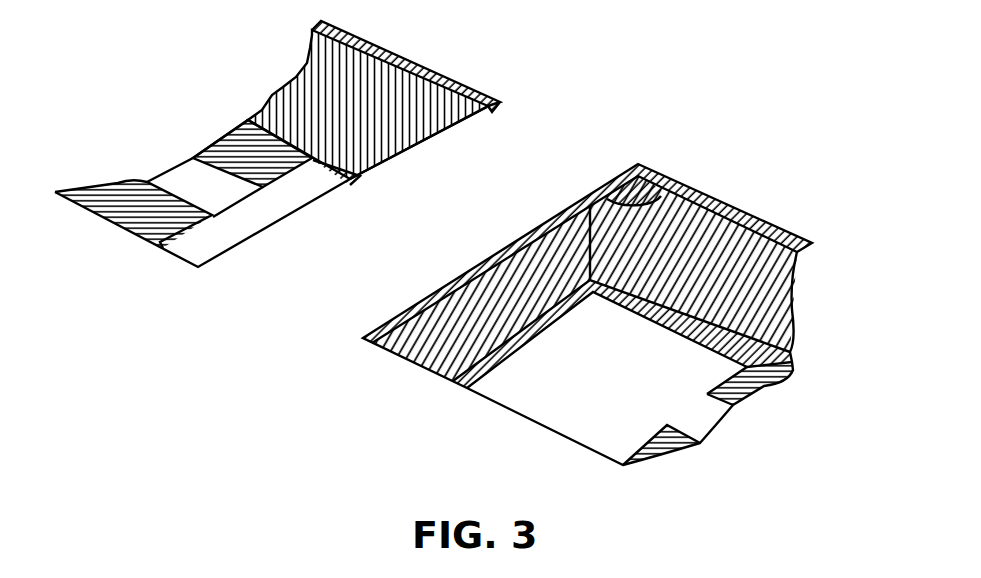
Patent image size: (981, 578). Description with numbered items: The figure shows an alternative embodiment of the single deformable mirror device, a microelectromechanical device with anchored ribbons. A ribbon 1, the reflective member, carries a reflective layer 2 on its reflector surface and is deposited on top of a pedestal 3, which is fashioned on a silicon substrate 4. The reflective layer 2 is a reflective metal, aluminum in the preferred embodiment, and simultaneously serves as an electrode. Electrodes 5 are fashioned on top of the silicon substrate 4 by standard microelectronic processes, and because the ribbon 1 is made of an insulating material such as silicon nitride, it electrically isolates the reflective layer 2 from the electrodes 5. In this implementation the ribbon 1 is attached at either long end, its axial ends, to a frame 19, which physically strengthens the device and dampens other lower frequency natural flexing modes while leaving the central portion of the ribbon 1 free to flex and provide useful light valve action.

The ribbon 1 is at (667, 198).
The reflective layer 2 is at (495, 168).
The pedestal 3 is at (472, 342).
The silicon substrate 4 is at (253, 153).
The electrodes 5 is at (231, 229).
The frame 19 is at (88, 232).